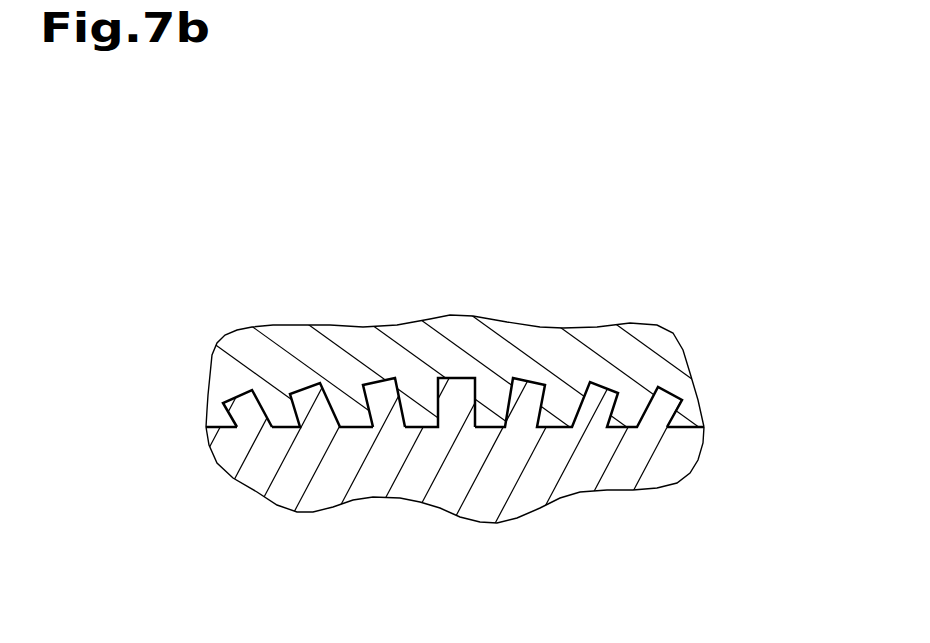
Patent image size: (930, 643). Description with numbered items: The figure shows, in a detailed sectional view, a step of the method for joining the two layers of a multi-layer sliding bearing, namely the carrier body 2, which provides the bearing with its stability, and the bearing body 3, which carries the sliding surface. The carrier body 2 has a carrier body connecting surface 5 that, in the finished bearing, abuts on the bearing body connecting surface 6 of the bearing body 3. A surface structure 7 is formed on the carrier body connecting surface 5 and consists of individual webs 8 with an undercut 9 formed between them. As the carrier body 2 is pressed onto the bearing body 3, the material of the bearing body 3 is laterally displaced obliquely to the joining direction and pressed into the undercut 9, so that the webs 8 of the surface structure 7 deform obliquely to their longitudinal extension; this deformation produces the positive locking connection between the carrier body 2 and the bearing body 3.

The carrier body 2 is at (275, 474).
The bearing body 3 is at (652, 335).
The carrier body connecting surface 5 is at (222, 369).
The bearing body connecting surface 6 is at (686, 434).
The surface structure 7 is at (208, 403).
The webs 8 is at (386, 398).
The undercut 9 is at (414, 375).